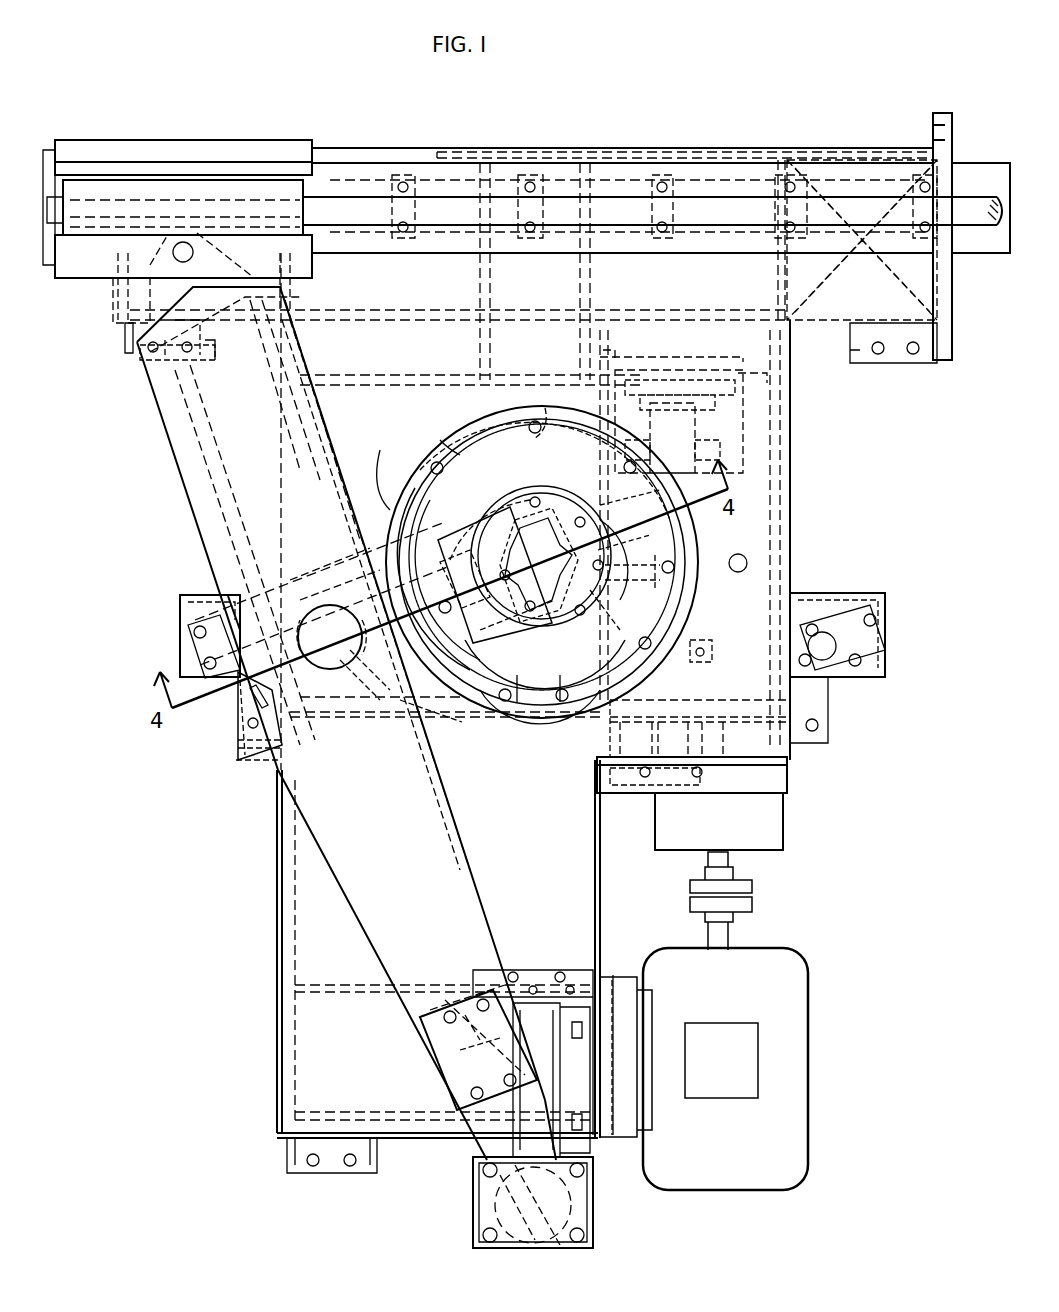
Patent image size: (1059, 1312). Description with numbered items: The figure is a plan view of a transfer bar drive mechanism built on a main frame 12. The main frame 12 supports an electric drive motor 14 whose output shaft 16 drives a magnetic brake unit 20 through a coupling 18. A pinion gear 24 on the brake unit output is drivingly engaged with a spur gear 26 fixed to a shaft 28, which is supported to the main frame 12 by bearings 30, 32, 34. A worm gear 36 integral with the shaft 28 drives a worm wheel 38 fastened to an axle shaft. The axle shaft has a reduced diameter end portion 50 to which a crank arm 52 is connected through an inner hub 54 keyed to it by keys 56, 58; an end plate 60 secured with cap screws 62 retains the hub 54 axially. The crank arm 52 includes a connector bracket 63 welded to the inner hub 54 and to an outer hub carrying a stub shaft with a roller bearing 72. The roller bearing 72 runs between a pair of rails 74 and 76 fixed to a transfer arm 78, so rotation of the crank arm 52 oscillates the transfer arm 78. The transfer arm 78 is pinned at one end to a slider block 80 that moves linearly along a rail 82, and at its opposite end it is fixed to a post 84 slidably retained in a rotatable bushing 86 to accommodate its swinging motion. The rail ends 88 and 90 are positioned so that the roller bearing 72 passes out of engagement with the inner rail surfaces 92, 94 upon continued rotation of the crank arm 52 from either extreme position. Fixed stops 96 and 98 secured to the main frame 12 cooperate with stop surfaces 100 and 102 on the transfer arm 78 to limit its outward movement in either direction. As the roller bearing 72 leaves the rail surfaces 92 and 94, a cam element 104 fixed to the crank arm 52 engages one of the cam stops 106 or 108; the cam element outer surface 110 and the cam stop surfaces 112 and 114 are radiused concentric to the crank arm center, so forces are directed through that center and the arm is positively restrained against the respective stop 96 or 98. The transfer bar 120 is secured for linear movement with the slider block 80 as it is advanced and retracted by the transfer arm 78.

The main frame 12 is at (275, 894).
The electric drive motor 14 is at (737, 1188).
The output shaft 16 is at (727, 940).
The coupling 18 is at (752, 906).
The magnetic brake unit 20 is at (785, 830).
The pinion gear 24 is at (733, 753).
The spur gear 26 is at (598, 748).
The shaft 28 is at (700, 620).
The bearing 30 is at (643, 778).
The bearing 32 is at (705, 655).
The bearing 34 is at (722, 470).
The worm gear 36 is at (718, 540).
The worm wheel 38 is at (512, 413).
The reduced diameter end portion 50 is at (602, 575).
The crank arm 52 is at (468, 516).
The inner hub 54 is at (640, 530).
The key 56 is at (500, 568).
The key 58 is at (600, 540).
The end plate 60 is at (596, 600).
The cap screws 62 is at (540, 520).
The connector bracket 63 is at (433, 535).
The roller bearing 72 is at (318, 598).
The rail 74 is at (183, 372).
The rail 76 is at (265, 340).
The transfer arm 78 is at (160, 425).
The slider block 80 is at (224, 138).
The rail 82 is at (395, 150).
The post 84 is at (487, 1150).
The rotatable bushing 86 is at (472, 1203).
The rail end 88 is at (305, 680).
The rail end 90 is at (378, 684).
The inner rail surface 92 is at (210, 440).
The inner rail surface 94 is at (278, 385).
The fixed stop 96 is at (185, 612).
The fixed stop 98 is at (828, 602).
The stop surface 100 is at (225, 580).
The stop surface 102 is at (410, 480).
The cam element 104 is at (460, 558).
The cam stop 106 is at (462, 725).
The cam stop 108 is at (238, 760).
The cam element outer surface 110 is at (520, 607).
The cam stop surface 112 is at (500, 648).
The cam stop surface 114 is at (232, 730).
The transfer bar 120 is at (322, 202).